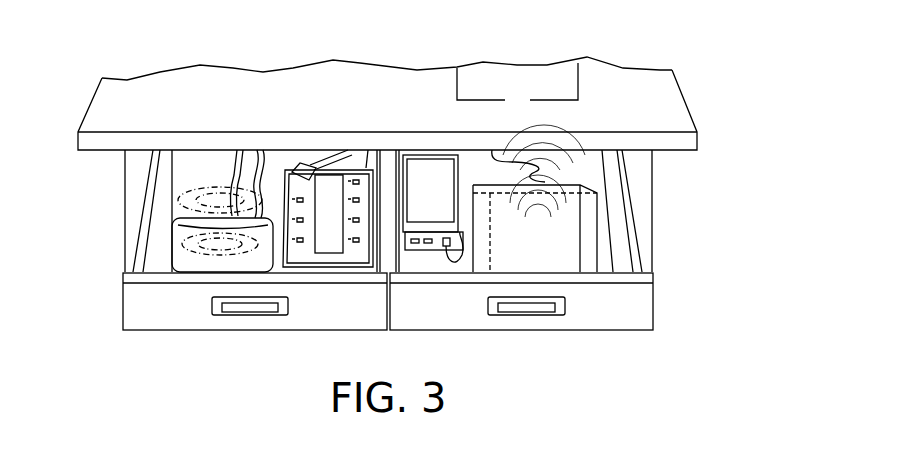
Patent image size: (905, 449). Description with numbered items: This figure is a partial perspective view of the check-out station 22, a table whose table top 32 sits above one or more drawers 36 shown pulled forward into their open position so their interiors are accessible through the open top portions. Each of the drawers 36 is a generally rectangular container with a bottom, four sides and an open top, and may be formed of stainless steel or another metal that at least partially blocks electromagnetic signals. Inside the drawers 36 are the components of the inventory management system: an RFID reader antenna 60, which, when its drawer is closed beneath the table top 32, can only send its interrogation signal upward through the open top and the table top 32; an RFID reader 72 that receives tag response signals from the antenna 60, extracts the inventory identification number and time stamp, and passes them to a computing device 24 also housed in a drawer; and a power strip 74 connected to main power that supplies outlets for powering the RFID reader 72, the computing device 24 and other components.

The check-out station 22 is at (688, 44).
The table top 32 is at (672, 93).
The drawers 36 is at (455, 312).
The RFID reader 72 is at (197, 257).
The power strip 74 is at (352, 180).
The computing device 24 is at (413, 168).
The RFID reader antenna 60 is at (578, 240).